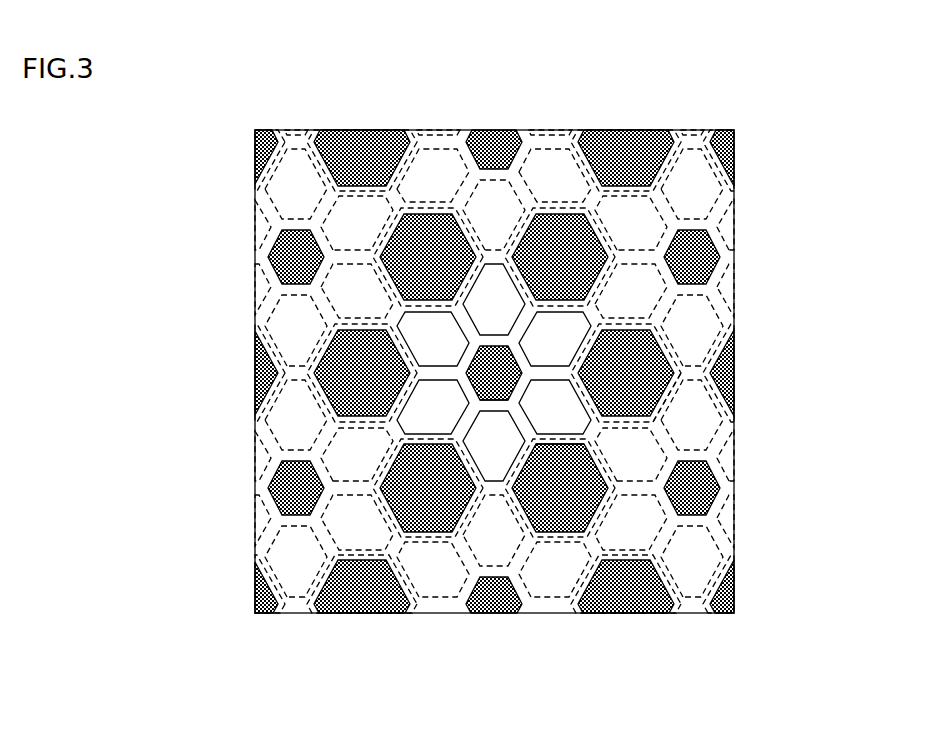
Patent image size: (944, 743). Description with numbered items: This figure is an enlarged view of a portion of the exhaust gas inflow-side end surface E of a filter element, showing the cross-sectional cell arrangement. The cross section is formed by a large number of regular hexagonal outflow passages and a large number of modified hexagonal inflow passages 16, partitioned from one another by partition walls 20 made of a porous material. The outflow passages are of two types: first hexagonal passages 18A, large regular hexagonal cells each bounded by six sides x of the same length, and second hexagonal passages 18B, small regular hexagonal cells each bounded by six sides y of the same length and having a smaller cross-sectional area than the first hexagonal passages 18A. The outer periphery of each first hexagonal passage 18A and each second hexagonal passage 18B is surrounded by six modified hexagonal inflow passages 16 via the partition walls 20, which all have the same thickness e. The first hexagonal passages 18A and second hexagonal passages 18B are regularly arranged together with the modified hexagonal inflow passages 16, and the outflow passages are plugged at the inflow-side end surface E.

The inflow passages 16 is at (500, 297).
The first hexagonal passages 18A is at (605, 225).
The second hexagonal passages 18B is at (515, 350).
The partition walls 20 is at (433, 433).
The sides of the first hexagonal passage x is at (675, 398).
The sides of the second hexagonal passage y is at (496, 388).
The thickness of the partition walls e is at (557, 478).
The exhaust gas inflow-side end surface E is at (723, 640).